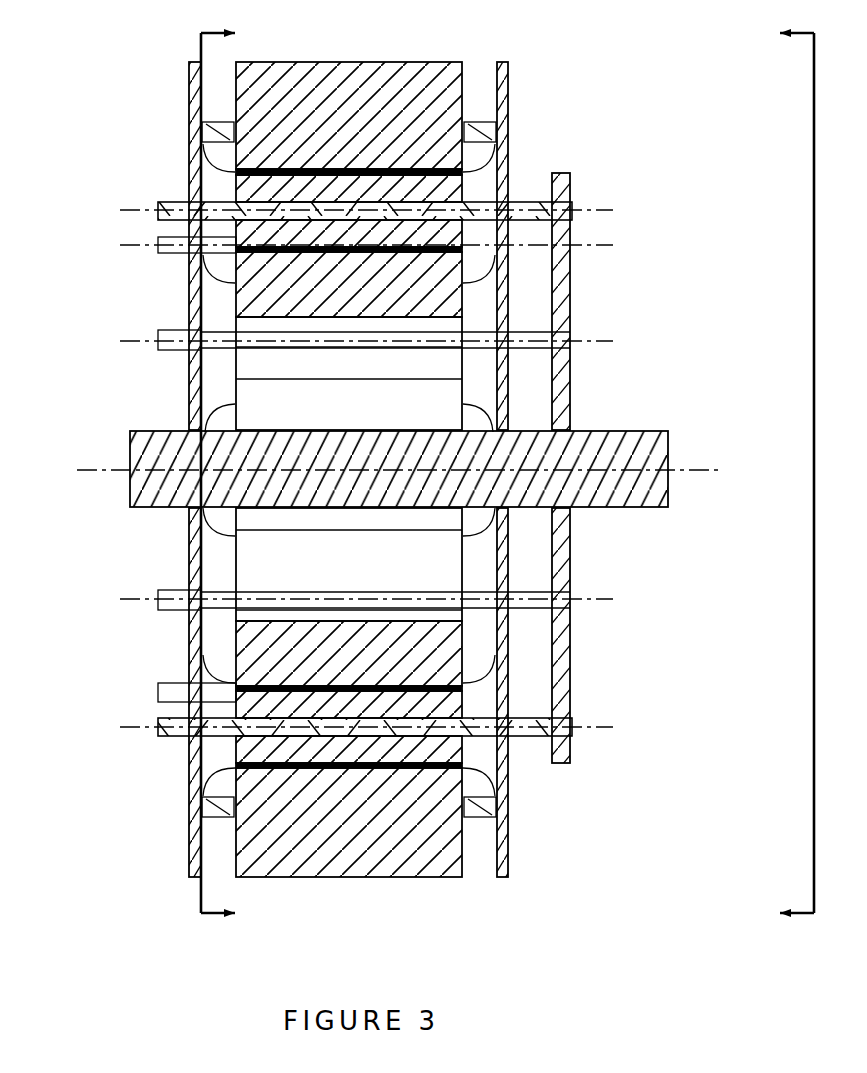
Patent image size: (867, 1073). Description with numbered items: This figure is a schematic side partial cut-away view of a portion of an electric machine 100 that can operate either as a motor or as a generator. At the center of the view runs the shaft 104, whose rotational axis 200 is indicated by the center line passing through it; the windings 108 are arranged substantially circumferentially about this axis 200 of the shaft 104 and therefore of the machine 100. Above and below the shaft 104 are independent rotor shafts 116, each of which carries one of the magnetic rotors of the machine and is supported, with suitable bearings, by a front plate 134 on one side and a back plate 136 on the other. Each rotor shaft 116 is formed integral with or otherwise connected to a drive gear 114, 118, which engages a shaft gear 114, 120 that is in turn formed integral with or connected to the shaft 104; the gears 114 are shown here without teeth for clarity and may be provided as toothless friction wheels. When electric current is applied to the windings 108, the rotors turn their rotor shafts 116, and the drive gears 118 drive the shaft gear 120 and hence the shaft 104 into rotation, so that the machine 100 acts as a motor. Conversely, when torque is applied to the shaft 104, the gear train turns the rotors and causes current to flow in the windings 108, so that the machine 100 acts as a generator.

The electric machine 100 is at (416, 475).
The shaft 104 is at (433, 429).
The windings 108 is at (220, 425).
The gears 114 is at (627, 461).
The rotor shaft 116 is at (404, 453).
The drive gear 118 is at (627, 461).
The shaft gear 120 is at (561, 635).
The front plate 134 is at (150, 476).
The back plate 136 is at (546, 485).
The axis 200 is at (429, 442).